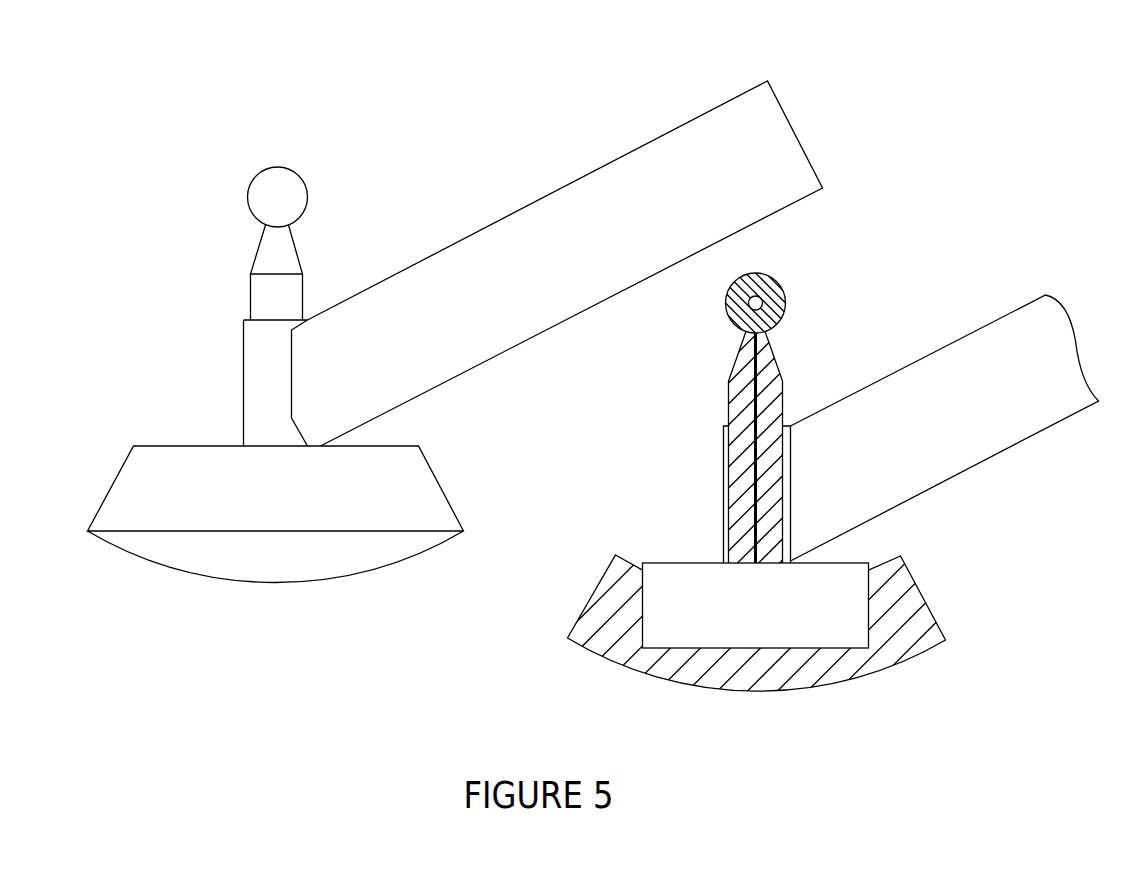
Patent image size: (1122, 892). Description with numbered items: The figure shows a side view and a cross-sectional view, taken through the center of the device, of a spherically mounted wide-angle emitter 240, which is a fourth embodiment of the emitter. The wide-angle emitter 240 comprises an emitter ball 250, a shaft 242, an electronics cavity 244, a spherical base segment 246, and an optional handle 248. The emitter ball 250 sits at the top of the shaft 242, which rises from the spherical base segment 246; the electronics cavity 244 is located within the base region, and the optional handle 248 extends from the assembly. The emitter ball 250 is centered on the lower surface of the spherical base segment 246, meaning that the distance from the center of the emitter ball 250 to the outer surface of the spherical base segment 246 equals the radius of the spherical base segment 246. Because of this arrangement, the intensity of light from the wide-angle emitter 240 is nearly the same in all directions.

The wide-angle emitter 240 is at (312, 66).
The shaft 242 is at (297, 248).
The electronics cavity 244 is at (703, 565).
The spherical base segment 246 is at (438, 487).
The handle 248 is at (562, 188).
The emitter ball 250 is at (292, 173).